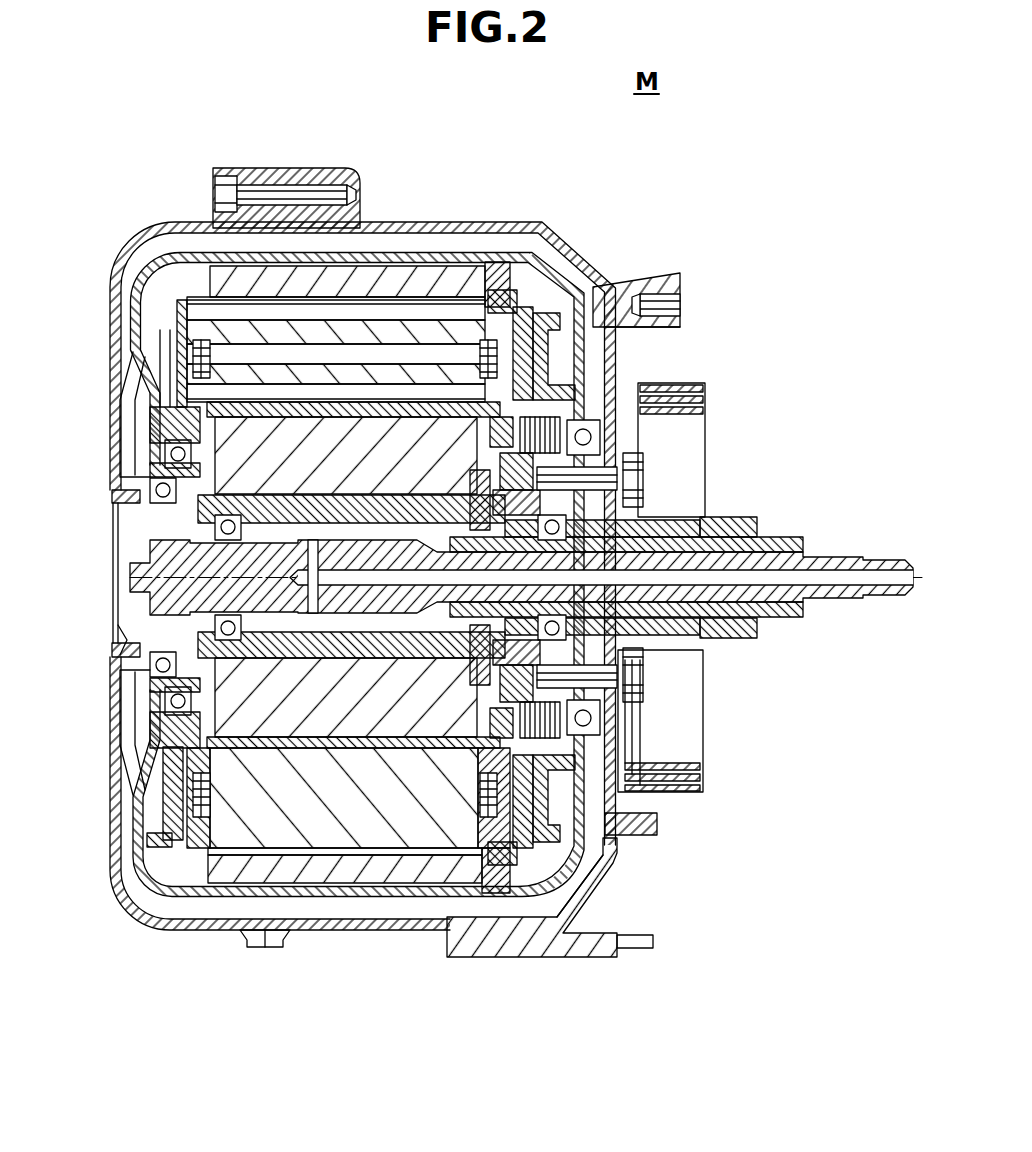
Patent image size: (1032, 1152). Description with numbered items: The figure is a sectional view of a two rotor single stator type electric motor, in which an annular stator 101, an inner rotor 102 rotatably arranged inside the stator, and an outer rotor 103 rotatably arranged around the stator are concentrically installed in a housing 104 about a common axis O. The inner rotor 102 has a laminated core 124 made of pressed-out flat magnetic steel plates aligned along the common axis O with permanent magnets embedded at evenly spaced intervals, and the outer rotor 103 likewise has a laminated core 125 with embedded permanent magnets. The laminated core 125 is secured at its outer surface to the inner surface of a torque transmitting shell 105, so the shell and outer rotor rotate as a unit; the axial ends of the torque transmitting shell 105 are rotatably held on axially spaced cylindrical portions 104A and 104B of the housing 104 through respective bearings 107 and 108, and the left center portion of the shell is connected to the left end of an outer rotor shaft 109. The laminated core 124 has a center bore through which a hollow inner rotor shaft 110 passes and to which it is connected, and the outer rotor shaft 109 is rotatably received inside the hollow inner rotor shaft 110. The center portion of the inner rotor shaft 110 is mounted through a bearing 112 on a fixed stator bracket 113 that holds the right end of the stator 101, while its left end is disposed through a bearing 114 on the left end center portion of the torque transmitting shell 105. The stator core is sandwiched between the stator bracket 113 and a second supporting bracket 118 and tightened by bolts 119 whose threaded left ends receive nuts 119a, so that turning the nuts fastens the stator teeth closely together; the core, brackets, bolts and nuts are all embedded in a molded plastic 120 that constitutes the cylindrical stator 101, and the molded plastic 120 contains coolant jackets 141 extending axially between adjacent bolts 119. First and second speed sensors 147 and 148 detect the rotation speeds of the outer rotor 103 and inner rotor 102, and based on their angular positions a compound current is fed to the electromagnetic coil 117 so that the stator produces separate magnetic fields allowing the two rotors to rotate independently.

The annular stator 101 is at (410, 287).
The inner rotor 102 is at (350, 742).
The outer rotor 103 is at (378, 252).
The housing 104 is at (590, 233).
The cylindrical portion of housing 104A is at (160, 513).
The cylindrical portion of housing 104B is at (600, 480).
The torque transmitting shell 105 is at (503, 287).
The bearing 107 is at (153, 480).
The bearing 108 is at (613, 387).
The outer rotor shaft 109 is at (877, 560).
The hollow inner rotor shaft 110 is at (660, 637).
The bearing 112 is at (600, 507).
The stator bracket 113 is at (533, 257).
The bearing 114 is at (150, 548).
The electromagnetic coil 117 is at (190, 823).
The supporting bracket 118 is at (122, 340).
The bolt 119 is at (307, 393).
The nut 119a is at (183, 300).
The molded plastic 120 is at (163, 280).
The laminated core 124 is at (470, 700).
The laminated core 125 is at (437, 297).
The coolant jacket 141 is at (165, 305).
The first speed sensor 147 is at (112, 625).
The second speed sensor 148 is at (520, 745).
The common axis O is at (888, 578).